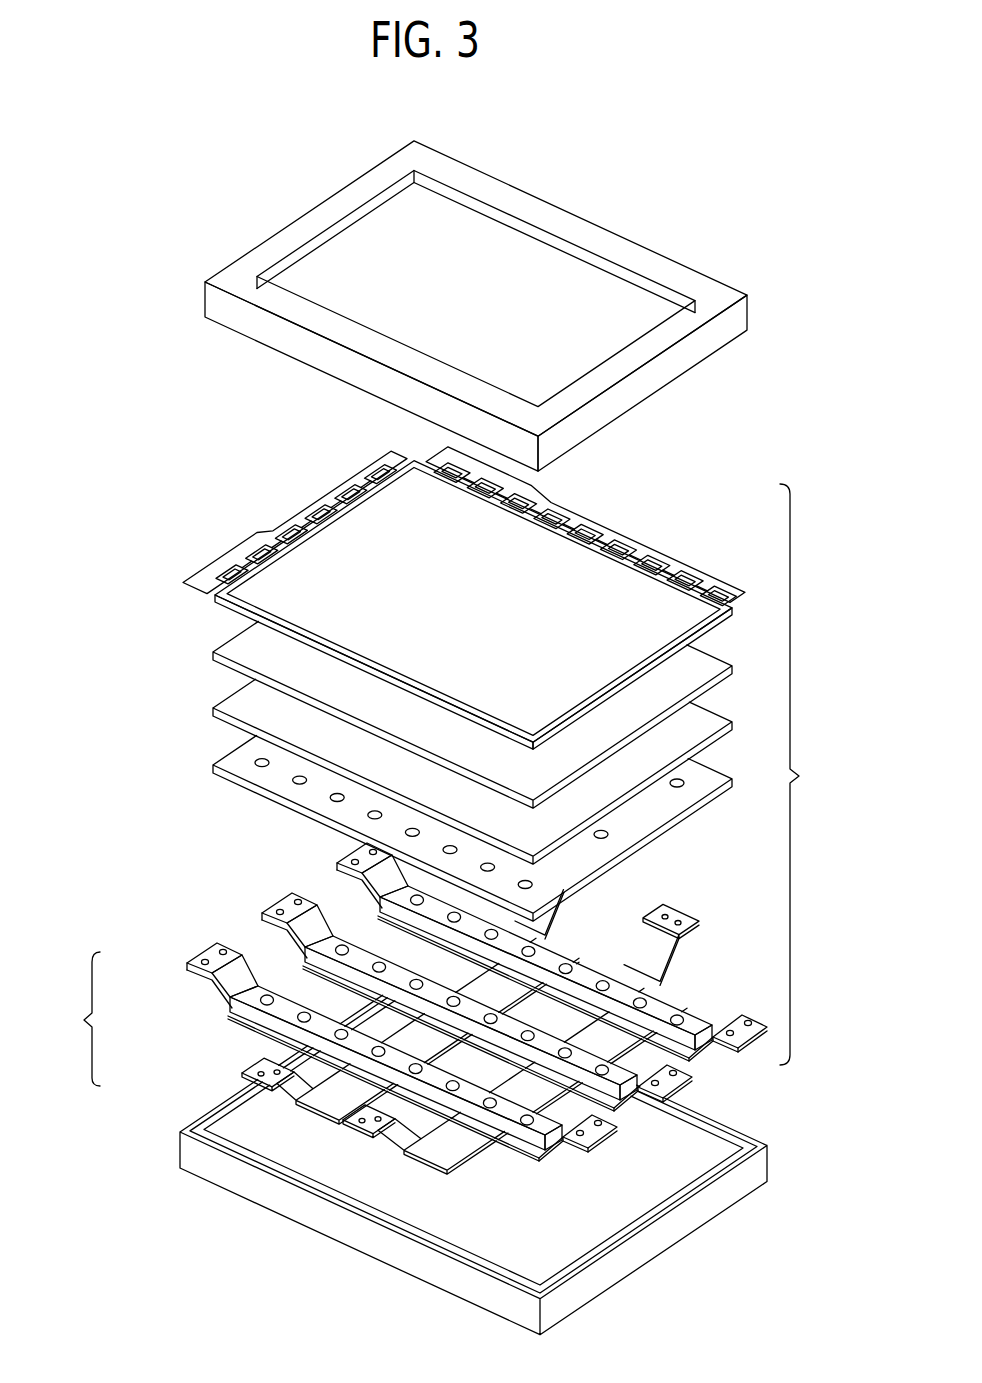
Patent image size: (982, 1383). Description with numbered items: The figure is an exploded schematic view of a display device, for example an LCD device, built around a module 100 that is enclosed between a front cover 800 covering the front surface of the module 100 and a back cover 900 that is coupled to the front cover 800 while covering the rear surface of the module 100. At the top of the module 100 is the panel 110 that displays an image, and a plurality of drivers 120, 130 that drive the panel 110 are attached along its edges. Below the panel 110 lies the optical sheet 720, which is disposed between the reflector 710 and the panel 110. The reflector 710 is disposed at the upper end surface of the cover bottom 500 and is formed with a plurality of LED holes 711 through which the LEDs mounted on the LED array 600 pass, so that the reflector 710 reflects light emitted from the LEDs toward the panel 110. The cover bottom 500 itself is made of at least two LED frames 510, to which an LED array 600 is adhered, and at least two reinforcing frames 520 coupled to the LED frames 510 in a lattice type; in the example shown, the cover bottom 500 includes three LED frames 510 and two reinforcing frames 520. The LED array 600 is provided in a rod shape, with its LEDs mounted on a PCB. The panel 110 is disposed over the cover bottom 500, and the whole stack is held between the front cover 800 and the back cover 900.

The module 100 is at (812, 774).
The panel 110 is at (300, 580).
The driver 120 is at (330, 498).
The driver 130 is at (603, 531).
The cover bottom 500 is at (369, 1008).
The LED frame 510 is at (197, 948).
The reinforcing frame 520 is at (244, 1063).
The LED array 600 is at (695, 1026).
The reflector 710 is at (429, 829).
The LED hole 711 is at (262, 768).
The optical sheet 720 is at (214, 709).
The front cover 800 is at (222, 297).
The back cover 900 is at (196, 1152).